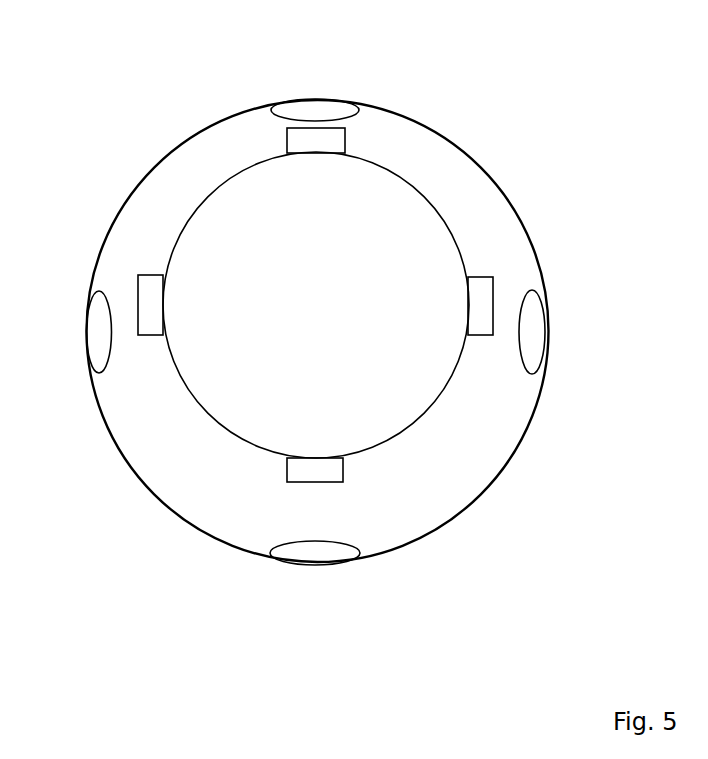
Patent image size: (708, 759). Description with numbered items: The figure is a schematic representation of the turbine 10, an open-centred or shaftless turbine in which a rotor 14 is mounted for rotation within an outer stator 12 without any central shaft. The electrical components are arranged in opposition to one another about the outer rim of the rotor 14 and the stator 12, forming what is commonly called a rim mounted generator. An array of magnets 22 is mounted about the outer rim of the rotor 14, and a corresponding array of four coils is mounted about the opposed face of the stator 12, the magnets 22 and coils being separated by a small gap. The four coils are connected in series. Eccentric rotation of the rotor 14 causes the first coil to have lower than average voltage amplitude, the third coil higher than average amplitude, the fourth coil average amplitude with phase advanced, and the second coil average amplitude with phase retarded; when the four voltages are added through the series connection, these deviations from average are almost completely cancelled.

The turbine 10 is at (152, 100).
The outer stator 12 is at (507, 462).
The rotor 14 is at (407, 430).
The magnets 22 is at (332, 142).